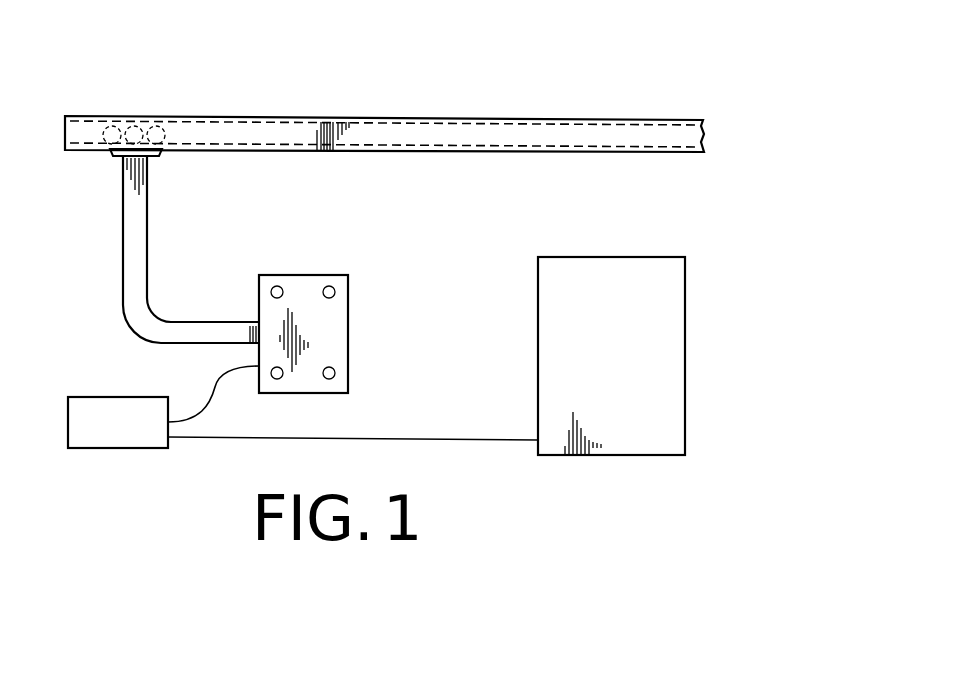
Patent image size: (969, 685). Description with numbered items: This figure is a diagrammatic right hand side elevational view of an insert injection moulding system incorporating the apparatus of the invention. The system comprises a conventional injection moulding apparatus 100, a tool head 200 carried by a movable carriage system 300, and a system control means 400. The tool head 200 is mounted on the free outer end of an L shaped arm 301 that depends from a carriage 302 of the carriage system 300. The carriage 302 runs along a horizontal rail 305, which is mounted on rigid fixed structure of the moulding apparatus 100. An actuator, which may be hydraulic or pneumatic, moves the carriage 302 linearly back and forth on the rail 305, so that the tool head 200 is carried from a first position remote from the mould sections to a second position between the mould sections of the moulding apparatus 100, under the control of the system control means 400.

The injection moulding apparatus 100 is at (637, 370).
The tool head 200 is at (353, 256).
The carriage system 300 is at (133, 249).
The L shaped arm 301 is at (138, 276).
The carriage 302 is at (109, 158).
The horizontal rail 305 is at (590, 126).
The system control means 400 is at (303, 407).